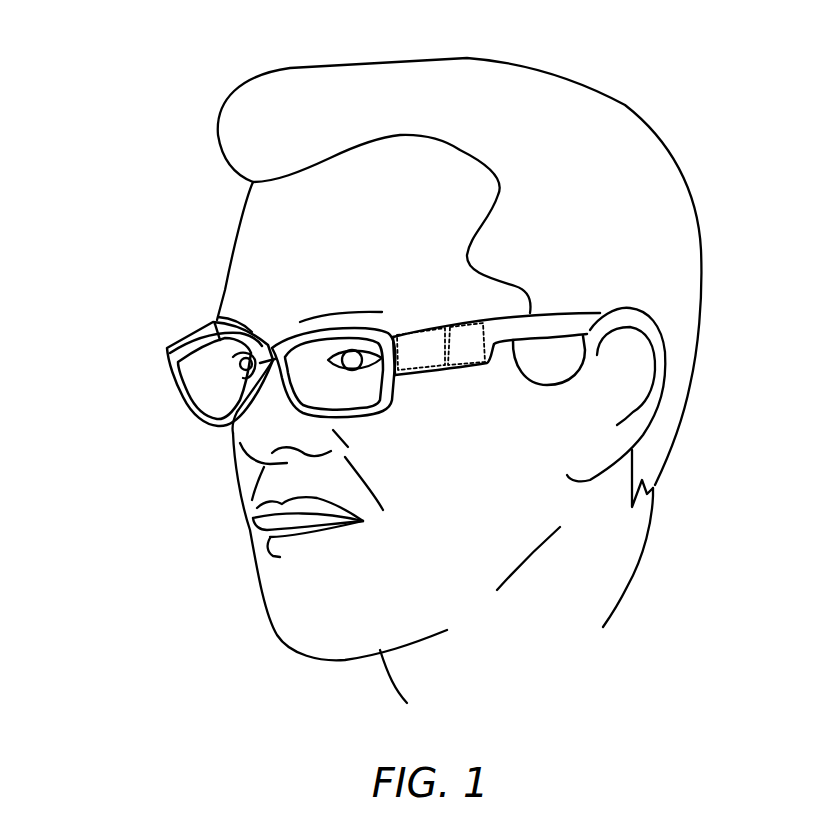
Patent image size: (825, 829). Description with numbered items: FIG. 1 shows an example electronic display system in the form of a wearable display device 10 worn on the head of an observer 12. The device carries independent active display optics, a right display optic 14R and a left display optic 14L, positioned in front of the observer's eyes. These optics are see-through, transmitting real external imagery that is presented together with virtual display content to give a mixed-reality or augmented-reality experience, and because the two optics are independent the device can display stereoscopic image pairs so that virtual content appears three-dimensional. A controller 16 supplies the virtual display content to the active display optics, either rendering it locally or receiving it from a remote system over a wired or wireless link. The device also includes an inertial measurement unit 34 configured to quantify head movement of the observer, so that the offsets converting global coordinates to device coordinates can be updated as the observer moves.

The wearable display device 10 is at (325, 384).
The observer 12 is at (759, 134).
The right display optic 14R is at (190, 395).
The left display optic 14L is at (348, 393).
The controller 16 is at (413, 358).
The inertial measurement unit 34 is at (477, 355).